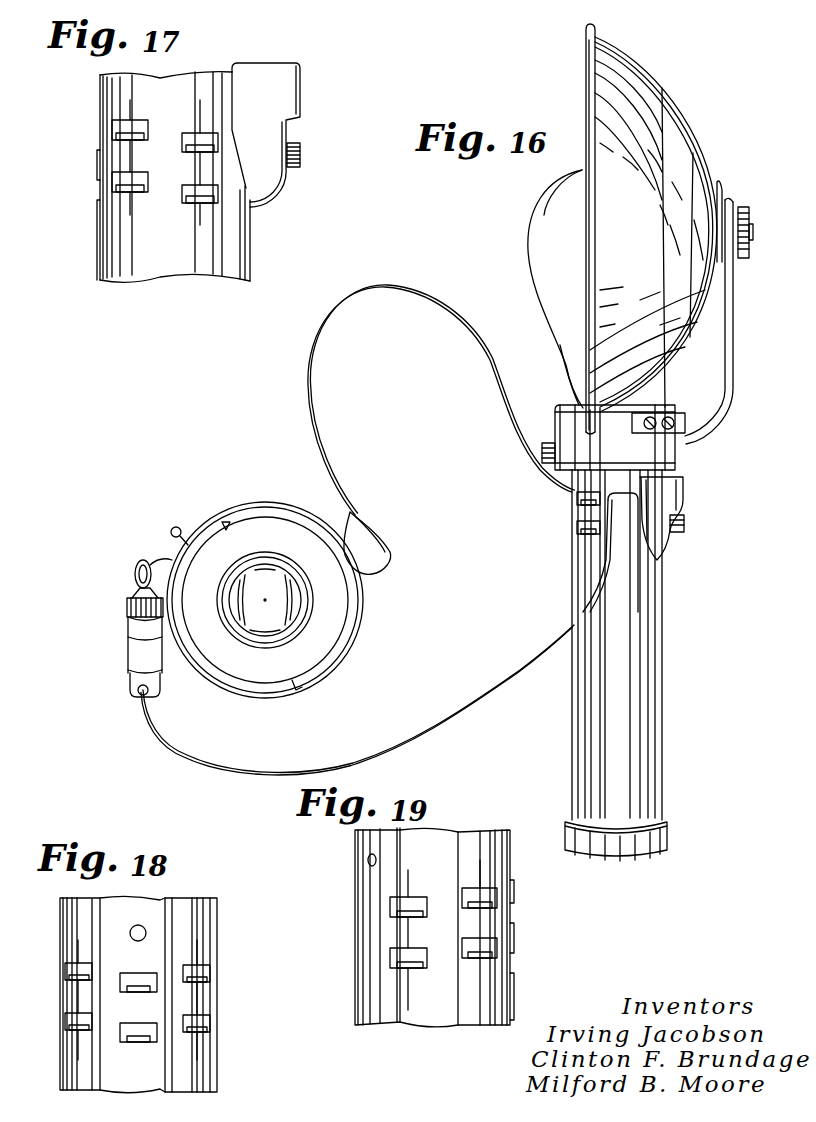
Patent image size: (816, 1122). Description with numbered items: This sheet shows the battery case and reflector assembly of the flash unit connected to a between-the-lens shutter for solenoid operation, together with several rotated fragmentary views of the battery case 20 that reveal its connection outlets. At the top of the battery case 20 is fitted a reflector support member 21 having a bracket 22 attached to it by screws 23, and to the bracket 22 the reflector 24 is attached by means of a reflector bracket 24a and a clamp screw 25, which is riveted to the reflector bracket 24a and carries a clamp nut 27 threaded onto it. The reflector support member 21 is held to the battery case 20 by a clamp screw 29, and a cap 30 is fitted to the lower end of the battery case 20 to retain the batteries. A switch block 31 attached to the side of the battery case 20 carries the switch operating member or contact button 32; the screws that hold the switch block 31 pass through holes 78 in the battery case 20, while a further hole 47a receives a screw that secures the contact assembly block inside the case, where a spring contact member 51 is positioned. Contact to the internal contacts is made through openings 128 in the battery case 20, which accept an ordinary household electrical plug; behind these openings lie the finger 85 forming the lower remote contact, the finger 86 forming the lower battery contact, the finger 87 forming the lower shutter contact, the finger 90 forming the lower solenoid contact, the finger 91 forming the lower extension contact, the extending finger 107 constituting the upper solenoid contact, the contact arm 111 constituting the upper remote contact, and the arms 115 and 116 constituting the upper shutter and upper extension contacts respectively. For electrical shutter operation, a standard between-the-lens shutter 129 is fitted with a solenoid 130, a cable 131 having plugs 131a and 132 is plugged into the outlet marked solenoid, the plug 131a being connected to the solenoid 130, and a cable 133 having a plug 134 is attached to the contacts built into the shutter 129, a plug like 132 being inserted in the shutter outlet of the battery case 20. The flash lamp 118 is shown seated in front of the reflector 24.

In FIG. 17, the battery case 20 is at (173, 177).
In FIG. 16, the battery case 20 is at (647, 660).
In FIG. 18, the battery case 20 is at (195, 1068).
In FIG. 19, the battery case 20 is at (488, 997).
In FIG. 16, the reflector support member 21 is at (587, 447).
In FIG. 16, the bracket 22 is at (725, 363).
In FIG. 16, the screws 23 is at (652, 425).
In FIG. 16, the reflector 24 is at (670, 127).
In FIG. 16, the reflector bracket 24a is at (723, 198).
In FIG. 16, the clamp screw 25 is at (752, 238).
In FIG. 16, the clamp nut 27 is at (749, 213).
In FIG. 16, the clamp screw 29 is at (545, 443).
In FIG. 16, the cap 30 is at (653, 837).
In FIG. 17, the switch block 31 is at (273, 99).
In FIG. 16, the switch block 31 is at (663, 483).
In FIG. 17, the switch operating member or contact button 32 is at (300, 157).
In FIG. 16, the switch operating member or contact button 32 is at (684, 523).
In FIG. 18, the hole 47a is at (132, 932).
In FIG. 18, the spring contact member 51 is at (130, 987).
In FIG. 19, the holes 78 is at (376, 860).
In FIG. 17, the finger 85 is at (130, 192).
In FIG. 18, the finger 85 is at (207, 1030).
In FIG. 18, the finger 86 is at (130, 1043).
In FIG. 18, the finger 87 is at (75, 1028).
In FIG. 19, the finger 87 is at (477, 955).
In FIG. 17, the finger 90 is at (187, 203).
In FIG. 19, the finger 91 is at (413, 912).
In FIG. 17, the extending finger 107 is at (187, 147).
In FIG. 17, the contact arm 111 is at (133, 132).
In FIG. 18, the contact arm 111 is at (203, 982).
In FIG. 18, the arm 115 is at (72, 980).
In FIG. 19, the arm 115 is at (475, 900).
In FIG. 19, the arm 116 is at (400, 968).
In FIG. 16, the flash bulb 118 is at (541, 232).
In FIG. 17, the openings 128 is at (118, 128).
In FIG. 18, the openings 128 is at (72, 967).
In FIG. 19, the openings 128 is at (397, 905).
In FIG. 16, the between-the-lens shutter 129 is at (332, 608).
In FIG. 16, the solenoid 130 is at (137, 652).
In FIG. 16, the cable 131 is at (468, 700).
In FIG. 16, the plug 131a is at (157, 687).
In FIG. 16, the plug 132 is at (620, 527).
In FIG. 16, the cable 133 is at (390, 288).
In FIG. 16, the plug 134 is at (374, 536).